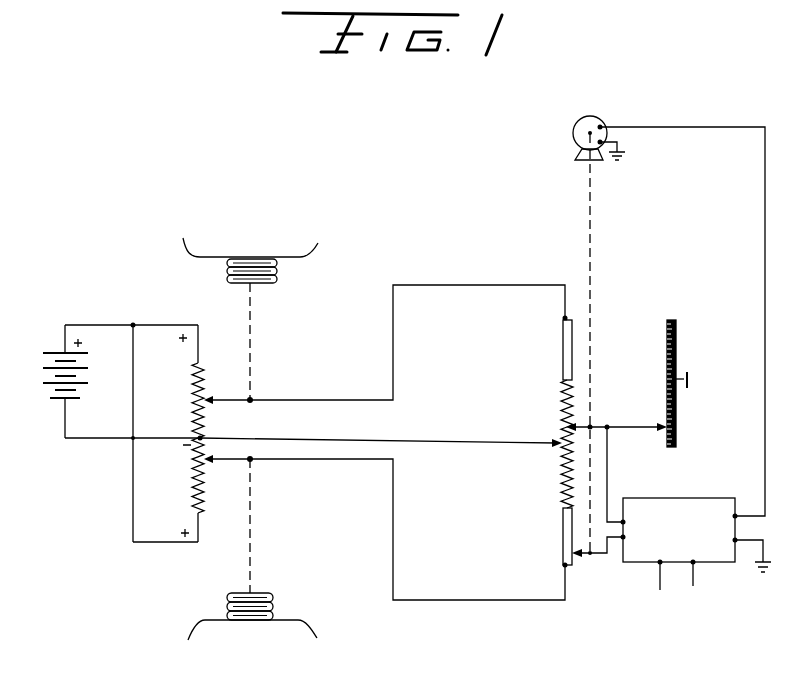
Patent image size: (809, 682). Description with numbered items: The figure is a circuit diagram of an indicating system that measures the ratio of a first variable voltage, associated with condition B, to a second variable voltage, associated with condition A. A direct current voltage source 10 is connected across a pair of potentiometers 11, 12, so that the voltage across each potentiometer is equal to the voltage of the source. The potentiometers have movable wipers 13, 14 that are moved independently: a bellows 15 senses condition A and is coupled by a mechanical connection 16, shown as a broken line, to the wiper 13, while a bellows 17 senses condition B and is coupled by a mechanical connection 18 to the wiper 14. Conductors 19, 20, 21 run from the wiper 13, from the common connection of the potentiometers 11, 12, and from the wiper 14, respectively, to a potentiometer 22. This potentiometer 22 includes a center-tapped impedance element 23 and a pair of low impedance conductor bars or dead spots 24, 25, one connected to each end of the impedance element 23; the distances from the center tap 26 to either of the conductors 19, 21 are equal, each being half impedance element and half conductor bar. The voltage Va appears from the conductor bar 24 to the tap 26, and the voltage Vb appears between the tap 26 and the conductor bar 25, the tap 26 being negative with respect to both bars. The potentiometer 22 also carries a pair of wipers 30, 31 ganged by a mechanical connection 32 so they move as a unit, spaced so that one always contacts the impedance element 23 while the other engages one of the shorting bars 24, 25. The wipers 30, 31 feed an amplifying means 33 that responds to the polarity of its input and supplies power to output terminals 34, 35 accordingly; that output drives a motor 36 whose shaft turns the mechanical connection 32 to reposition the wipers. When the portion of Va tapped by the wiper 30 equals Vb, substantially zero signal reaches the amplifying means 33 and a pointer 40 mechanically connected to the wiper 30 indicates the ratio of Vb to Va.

The direct current voltage source 10 is at (54, 353).
The potentiometer 11 is at (193, 414).
The potentiometer 12 is at (193, 485).
The movable wiper 13 is at (212, 397).
The movable wiper 14 is at (215, 461).
The bellows 15 is at (277, 276).
The mechanical connection 16 is at (251, 325).
The bellows 17 is at (273, 602).
The mechanical connection 18 is at (251, 515).
The conductor 19 is at (337, 400).
The conductor 20 is at (417, 446).
The conductor 21 is at (432, 598).
The potentiometer 22 is at (536, 434).
The center-tapped impedance element 23 is at (560, 416).
The low impedance conductor bar 24 is at (562, 326).
The low impedance conductor bar 25 is at (562, 540).
The center tap 26 is at (557, 449).
The potentiometer wiper 30 is at (585, 424).
The potentiometer wiper 31 is at (587, 557).
The mechanical connection 32 is at (592, 232).
The amplifying means 33 is at (690, 497).
The output terminal 34 is at (735, 515).
The output terminal 35 is at (734, 543).
The motor 36 is at (592, 116).
The pointer 40 is at (678, 414).